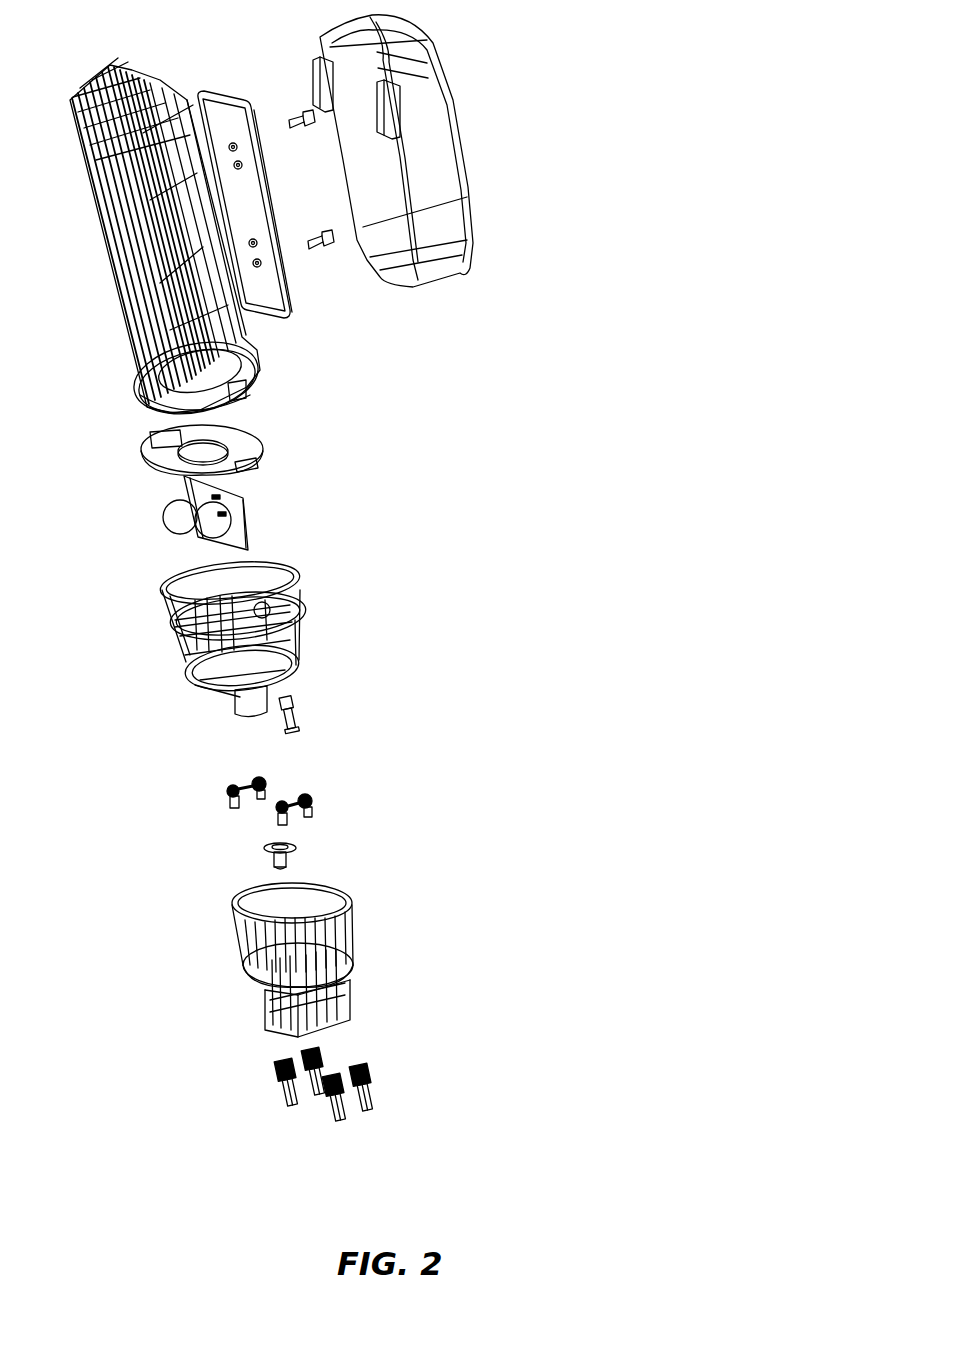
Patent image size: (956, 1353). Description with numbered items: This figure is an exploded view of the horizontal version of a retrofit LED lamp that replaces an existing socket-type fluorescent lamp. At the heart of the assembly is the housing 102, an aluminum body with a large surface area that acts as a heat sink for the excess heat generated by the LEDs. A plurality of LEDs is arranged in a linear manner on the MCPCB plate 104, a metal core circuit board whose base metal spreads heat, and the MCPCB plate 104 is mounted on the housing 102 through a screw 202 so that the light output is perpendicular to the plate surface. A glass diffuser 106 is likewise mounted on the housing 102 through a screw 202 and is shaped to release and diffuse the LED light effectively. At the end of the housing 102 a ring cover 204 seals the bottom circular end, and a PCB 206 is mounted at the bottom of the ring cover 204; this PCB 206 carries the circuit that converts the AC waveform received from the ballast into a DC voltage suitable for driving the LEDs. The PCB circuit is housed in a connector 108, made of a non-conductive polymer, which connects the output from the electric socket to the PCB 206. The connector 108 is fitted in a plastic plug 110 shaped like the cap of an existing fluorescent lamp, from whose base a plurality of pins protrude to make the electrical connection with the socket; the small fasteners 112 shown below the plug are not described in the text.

The housing 102 is at (268, 385).
The MCPCB plate 104 is at (297, 298).
The diffuser 106 is at (455, 103).
The connector 108 is at (305, 613).
The plastic plug 110 is at (363, 938).
The screws 112 is at (370, 1078).
The screw 202 is at (338, 243).
The ring cover 204 is at (265, 452).
The PCB 206 is at (260, 519).